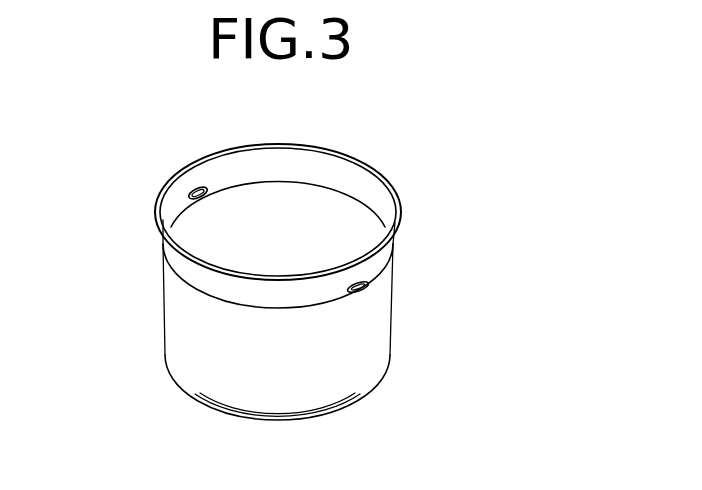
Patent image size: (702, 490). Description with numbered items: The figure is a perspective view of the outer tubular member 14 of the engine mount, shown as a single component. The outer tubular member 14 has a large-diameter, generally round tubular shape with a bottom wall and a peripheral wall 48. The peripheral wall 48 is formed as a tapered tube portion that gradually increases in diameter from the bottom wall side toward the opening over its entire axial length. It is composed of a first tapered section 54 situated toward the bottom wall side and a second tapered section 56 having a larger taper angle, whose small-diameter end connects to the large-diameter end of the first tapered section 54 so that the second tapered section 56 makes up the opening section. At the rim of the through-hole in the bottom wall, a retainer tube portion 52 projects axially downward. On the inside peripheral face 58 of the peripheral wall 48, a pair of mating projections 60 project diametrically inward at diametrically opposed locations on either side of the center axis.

The outer tubular member 14 is at (250, 291).
The peripheral wall 48 is at (220, 227).
The retainer tube portion 52 is at (277, 418).
The first tapered section 54 is at (174, 283).
The second tapered section 56 is at (237, 203).
The inside peripheral face 58 is at (282, 174).
The mating projection 60 is at (194, 190).